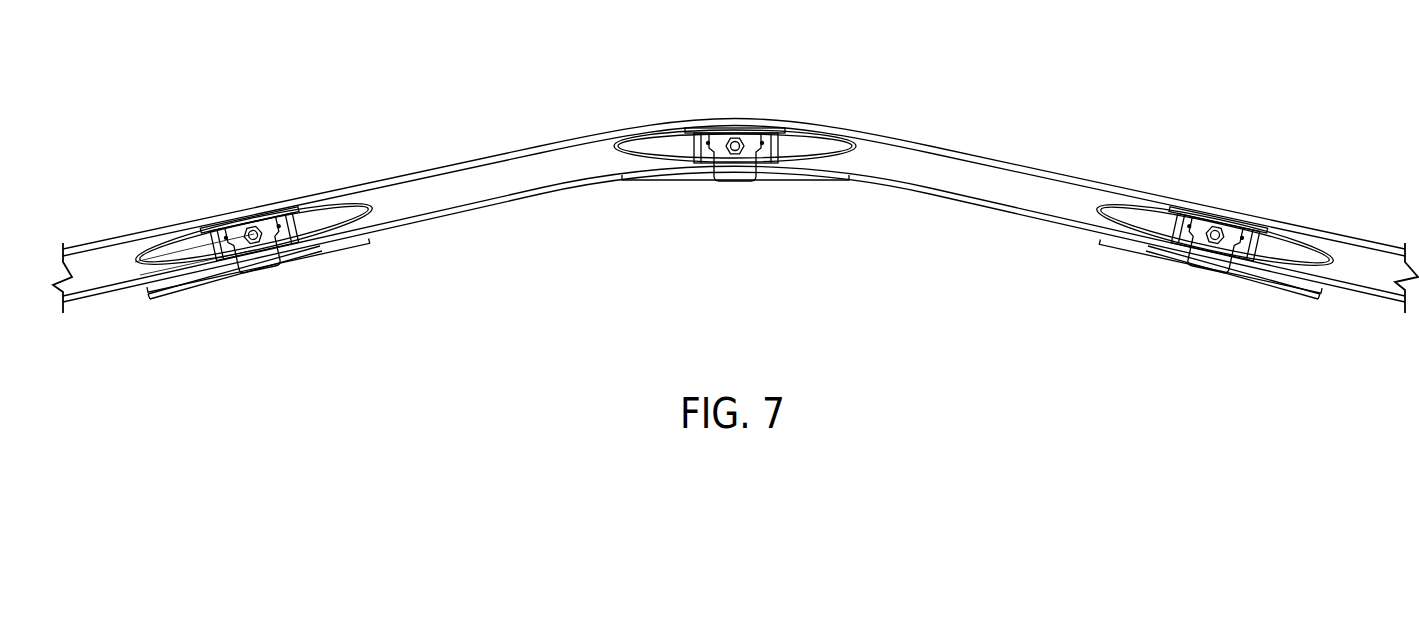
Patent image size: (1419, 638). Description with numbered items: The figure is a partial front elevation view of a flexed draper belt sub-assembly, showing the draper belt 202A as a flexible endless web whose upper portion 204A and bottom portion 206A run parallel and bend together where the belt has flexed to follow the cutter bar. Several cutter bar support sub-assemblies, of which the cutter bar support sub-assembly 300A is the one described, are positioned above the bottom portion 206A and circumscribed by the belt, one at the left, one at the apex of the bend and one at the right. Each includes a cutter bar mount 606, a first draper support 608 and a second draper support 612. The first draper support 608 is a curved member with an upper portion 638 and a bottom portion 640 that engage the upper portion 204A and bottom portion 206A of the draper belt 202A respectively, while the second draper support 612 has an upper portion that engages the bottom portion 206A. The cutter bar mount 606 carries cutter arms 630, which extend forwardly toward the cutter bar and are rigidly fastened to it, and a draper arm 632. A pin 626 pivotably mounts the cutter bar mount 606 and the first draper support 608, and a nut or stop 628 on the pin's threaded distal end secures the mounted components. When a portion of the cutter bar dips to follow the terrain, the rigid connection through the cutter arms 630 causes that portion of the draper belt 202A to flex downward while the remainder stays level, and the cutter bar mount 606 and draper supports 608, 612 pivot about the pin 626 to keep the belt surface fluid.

The draper belt 202A is at (460, 161).
The upper portion 204A is at (989, 147).
The bottom portion 206A is at (930, 212).
The cutter bar support sub-assembly 300A is at (308, 257).
The cutter bar mount 606 is at (335, 240).
The first draper support 608 is at (348, 197).
The second draper support 612 is at (318, 248).
The pin 626 is at (253, 234).
The nut or stop 628 is at (216, 226).
The cutter arms 630 is at (252, 235).
The draper arm 632 is at (255, 246).
The upper portion 638 is at (142, 238).
The bottom portion 640 is at (146, 284).